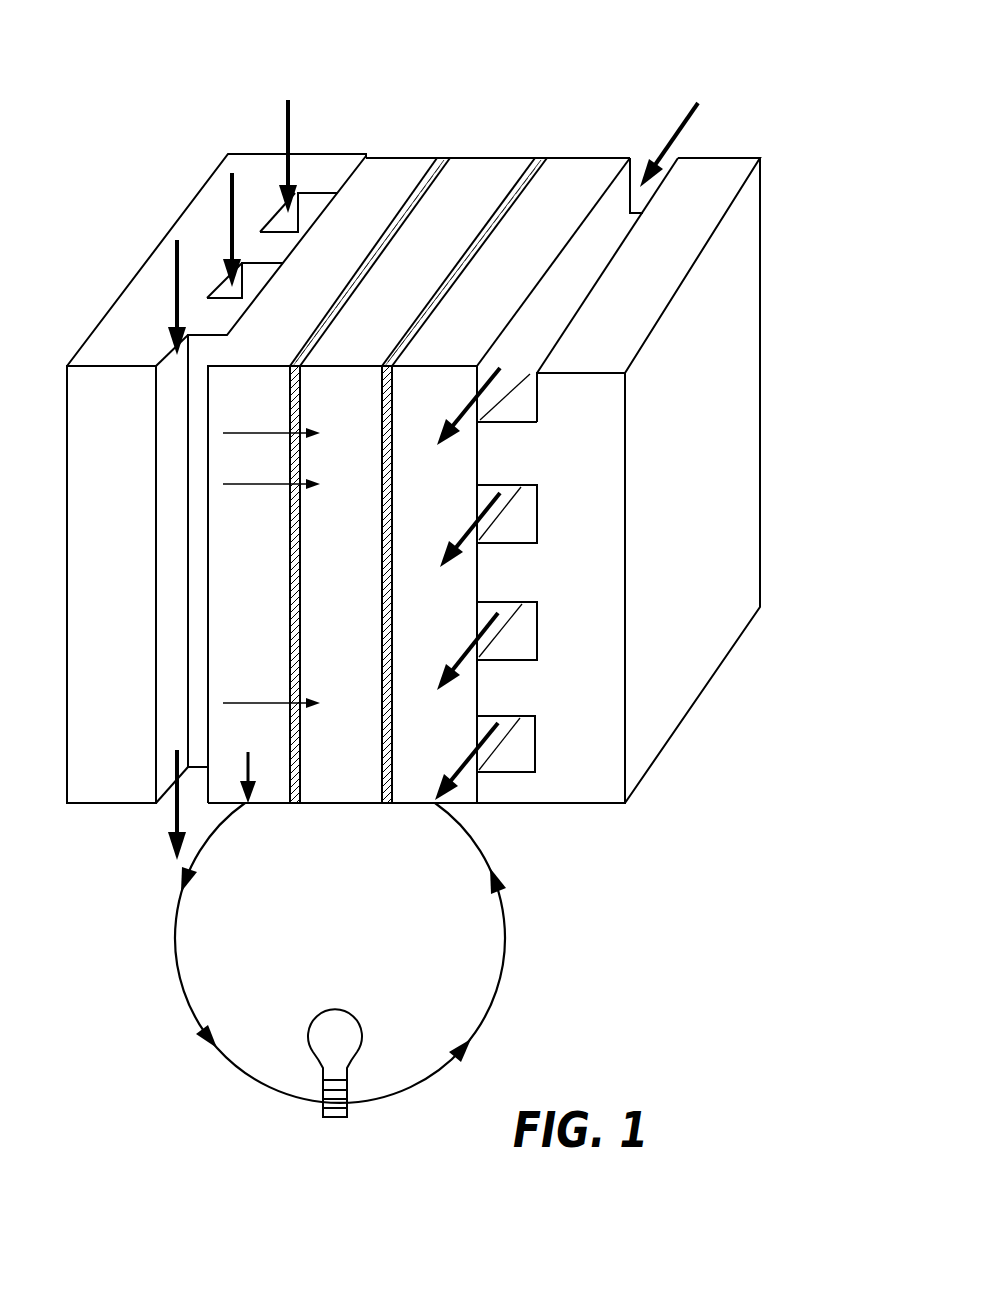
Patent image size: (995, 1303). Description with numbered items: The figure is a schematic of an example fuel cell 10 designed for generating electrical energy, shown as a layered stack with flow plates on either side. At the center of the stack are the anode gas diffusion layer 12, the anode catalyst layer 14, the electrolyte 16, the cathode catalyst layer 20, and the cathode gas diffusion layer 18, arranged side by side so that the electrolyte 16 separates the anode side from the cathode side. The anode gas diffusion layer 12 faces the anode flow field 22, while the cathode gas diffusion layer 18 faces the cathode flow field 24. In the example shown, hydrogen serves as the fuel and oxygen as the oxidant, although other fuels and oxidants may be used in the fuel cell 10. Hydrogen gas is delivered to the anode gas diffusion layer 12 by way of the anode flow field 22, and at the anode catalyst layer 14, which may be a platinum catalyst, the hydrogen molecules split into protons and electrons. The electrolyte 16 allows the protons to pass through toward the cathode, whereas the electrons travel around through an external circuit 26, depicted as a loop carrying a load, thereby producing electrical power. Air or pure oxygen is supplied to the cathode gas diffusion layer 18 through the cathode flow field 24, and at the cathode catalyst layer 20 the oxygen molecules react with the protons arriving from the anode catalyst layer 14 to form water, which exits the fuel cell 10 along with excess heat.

The fuel cell 10 is at (95, 152).
The anode gas diffusion layer 12 is at (392, 196).
The anode catalyst layer 14 is at (442, 168).
The electrolyte 16 is at (489, 196).
The cathode gas diffusion layer 18 is at (584, 196).
The cathode catalyst layer 20 is at (538, 168).
The anode flow field 22 is at (315, 205).
The cathode flow field 24 is at (522, 407).
The external circuit 26 is at (174, 963).